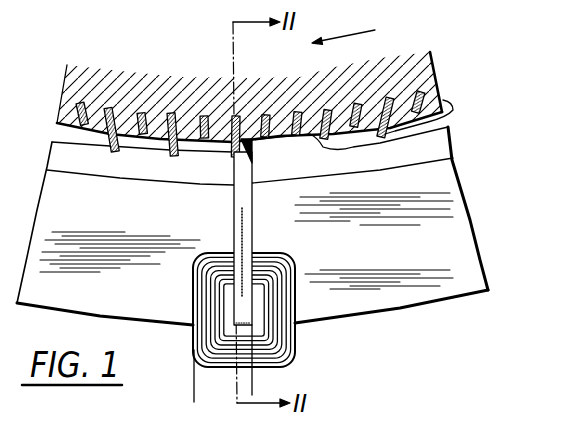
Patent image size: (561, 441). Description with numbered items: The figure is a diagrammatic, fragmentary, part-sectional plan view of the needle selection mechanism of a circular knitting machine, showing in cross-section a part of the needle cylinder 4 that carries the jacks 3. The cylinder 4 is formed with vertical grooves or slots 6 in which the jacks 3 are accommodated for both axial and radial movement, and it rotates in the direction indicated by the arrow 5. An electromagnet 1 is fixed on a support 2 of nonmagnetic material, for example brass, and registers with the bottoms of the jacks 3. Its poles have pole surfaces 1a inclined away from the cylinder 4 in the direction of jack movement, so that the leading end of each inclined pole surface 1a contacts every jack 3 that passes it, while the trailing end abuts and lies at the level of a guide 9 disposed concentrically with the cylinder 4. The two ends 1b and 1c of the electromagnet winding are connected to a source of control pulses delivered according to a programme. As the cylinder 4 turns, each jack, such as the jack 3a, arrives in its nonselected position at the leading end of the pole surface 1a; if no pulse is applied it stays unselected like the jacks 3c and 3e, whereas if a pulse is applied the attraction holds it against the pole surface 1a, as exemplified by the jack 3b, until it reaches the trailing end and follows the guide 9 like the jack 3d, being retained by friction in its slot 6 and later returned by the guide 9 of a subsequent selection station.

The electromagnet 1 is at (305, 340).
The pole surfaces 1a is at (250, 163).
The winding end 1b is at (253, 383).
The winding end 1c is at (194, 389).
The support 2 is at (252, 226).
The jacks 3 is at (446, 100).
The jack 3a is at (270, 133).
The jack 3b is at (233, 143).
The jack 3c is at (203, 138).
The jack 3d is at (170, 147).
The jack 3e is at (141, 113).
The needle cylinder 4 is at (405, 68).
The arrow 5 is at (351, 33).
The grooves or slots 6 is at (108, 110).
The guide 9 is at (452, 142).